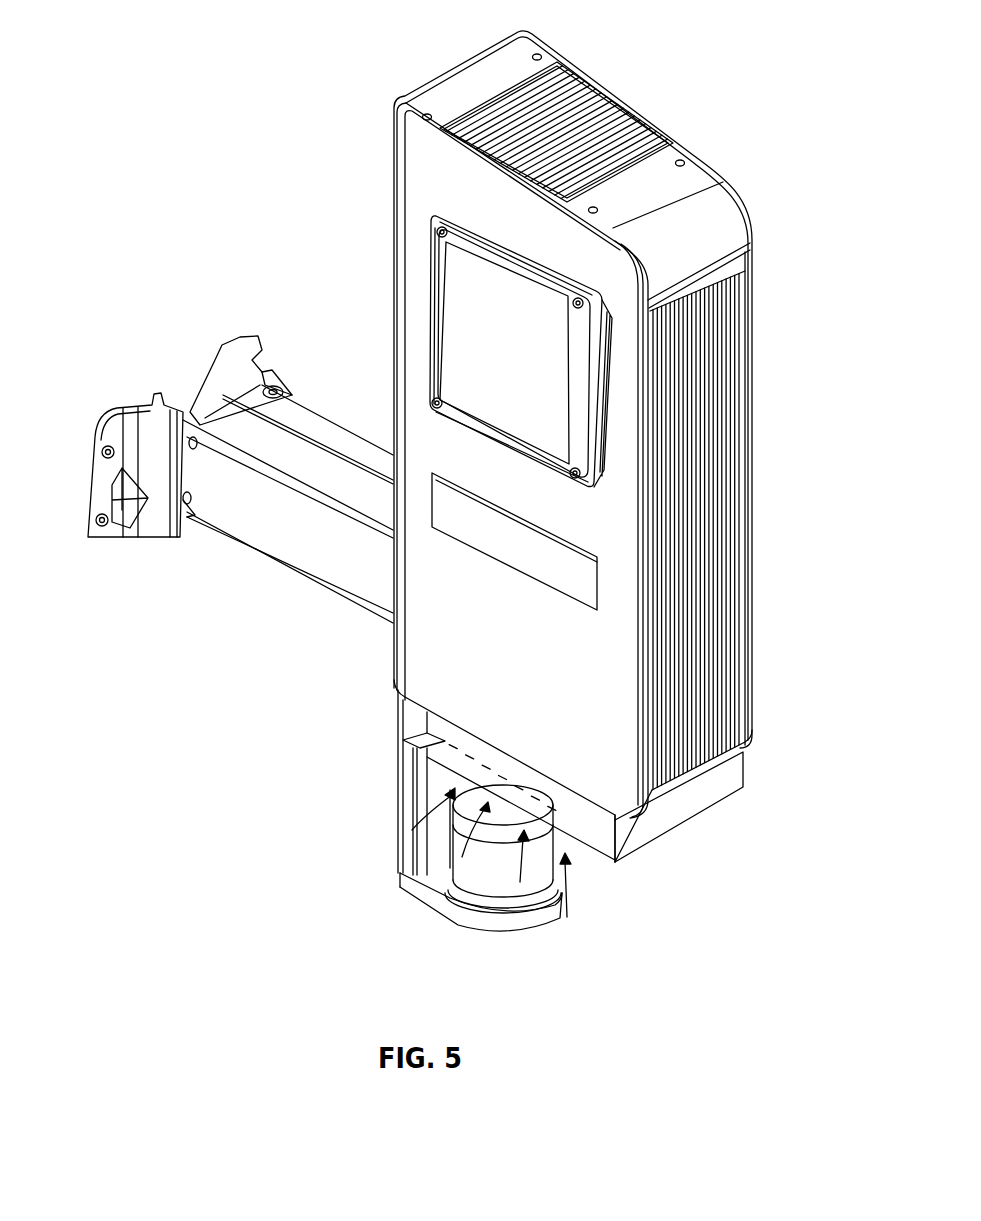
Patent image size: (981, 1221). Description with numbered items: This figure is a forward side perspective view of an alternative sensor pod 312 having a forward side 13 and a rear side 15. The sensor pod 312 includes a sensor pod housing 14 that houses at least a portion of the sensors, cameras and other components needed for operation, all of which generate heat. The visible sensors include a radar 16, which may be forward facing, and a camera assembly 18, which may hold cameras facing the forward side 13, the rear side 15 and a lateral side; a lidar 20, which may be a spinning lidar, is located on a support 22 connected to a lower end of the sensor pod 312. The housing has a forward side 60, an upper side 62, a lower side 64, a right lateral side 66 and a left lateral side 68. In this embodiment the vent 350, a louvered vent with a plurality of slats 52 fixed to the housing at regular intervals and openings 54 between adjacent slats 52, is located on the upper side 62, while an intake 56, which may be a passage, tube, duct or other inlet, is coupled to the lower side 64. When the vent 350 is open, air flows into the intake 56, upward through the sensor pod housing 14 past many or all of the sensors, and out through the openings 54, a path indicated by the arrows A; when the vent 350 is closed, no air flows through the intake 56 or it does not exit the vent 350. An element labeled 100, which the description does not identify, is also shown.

The forward side 13 is at (278, 268).
The sensor pod housing 14 is at (418, 651).
The rear side 15 is at (790, 255).
The radar 16 is at (620, 388).
The camera assembly 18 is at (465, 537).
The lidar 20 is at (477, 862).
The support 22 is at (447, 910).
The slats 52 is at (465, 138).
The openings 54 is at (490, 118).
The intake 56 is at (463, 740).
The forward side of the sensor pod housing 60 is at (613, 752).
The upper side 62 is at (645, 185).
The lower side 64 is at (615, 853).
The right lateral side 66 is at (708, 540).
The left lateral side 68 is at (395, 235).
The mounting arm 100 is at (293, 342).
The sensor pod 312 is at (762, 143).
The vent 350 is at (603, 73).
The airflow direction A is at (430, 773).